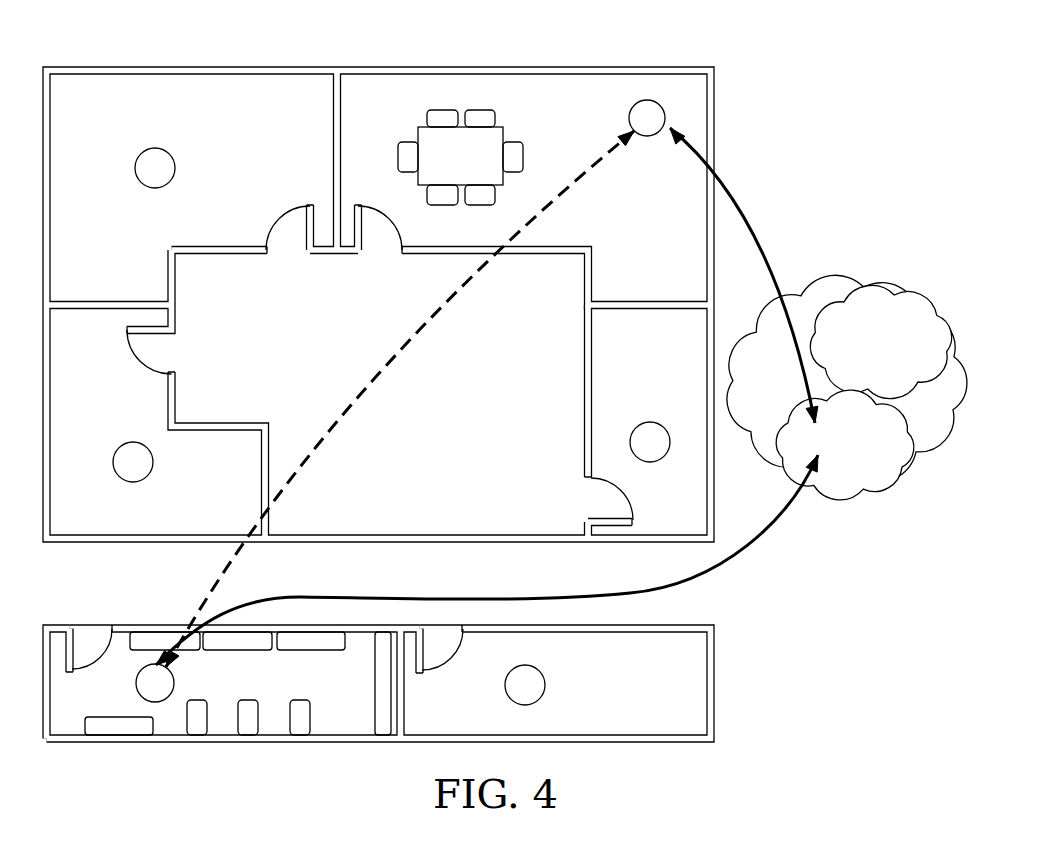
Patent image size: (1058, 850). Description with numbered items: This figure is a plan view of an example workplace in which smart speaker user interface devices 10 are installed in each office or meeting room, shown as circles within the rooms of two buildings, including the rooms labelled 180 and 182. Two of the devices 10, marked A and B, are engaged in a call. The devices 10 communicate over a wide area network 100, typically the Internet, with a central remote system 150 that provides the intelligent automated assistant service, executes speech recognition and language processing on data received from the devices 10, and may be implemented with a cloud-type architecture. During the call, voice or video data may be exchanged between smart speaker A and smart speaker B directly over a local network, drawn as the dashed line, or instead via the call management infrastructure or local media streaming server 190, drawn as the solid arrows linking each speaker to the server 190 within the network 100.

The user interface device 10 is at (160, 149).
The wide area network 100 is at (798, 381).
The remote system 150 is at (901, 358).
The first location (room A) 180 is at (668, 192).
The second location (room B) 182 is at (245, 692).
The call management infrastructure 190 is at (871, 463).